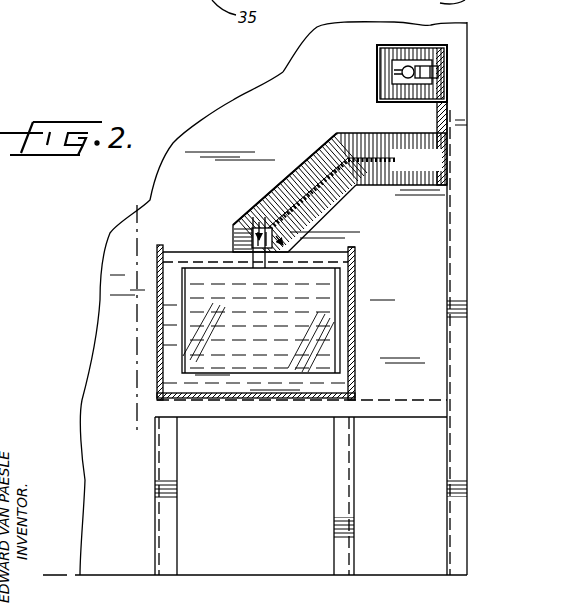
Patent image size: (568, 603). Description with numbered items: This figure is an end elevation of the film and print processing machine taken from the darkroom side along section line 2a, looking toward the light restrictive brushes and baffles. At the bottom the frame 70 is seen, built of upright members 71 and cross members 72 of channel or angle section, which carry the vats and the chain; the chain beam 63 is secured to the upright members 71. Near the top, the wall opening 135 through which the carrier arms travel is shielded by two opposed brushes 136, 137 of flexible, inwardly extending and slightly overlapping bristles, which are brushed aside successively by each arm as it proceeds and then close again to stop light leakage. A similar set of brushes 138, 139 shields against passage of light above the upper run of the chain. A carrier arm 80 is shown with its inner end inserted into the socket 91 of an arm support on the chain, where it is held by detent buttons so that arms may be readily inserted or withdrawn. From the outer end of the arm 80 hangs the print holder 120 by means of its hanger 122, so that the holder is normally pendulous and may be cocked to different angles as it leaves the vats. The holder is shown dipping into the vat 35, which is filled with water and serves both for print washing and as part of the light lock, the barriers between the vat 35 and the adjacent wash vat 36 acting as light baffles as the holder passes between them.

The section line 2a is at (168, 205).
The vat 35 is at (352, 316).
The wash vat 36 is at (30, 0).
The chain beam 63 is at (447, 103).
The frame 70 is at (147, 507).
The upright members 71 is at (461, 362).
The cross members 72 is at (275, 420).
The carrier arm 80 is at (283, 206).
The socket 91 is at (384, 67).
The print holder 120 is at (338, 266).
The hanger 122 is at (232, 230).
The wall opening 135 is at (295, 155).
The brush 136 is at (356, 131).
The brush 137 is at (374, 182).
The brush 138 is at (447, 45).
The brush 139 is at (381, 88).